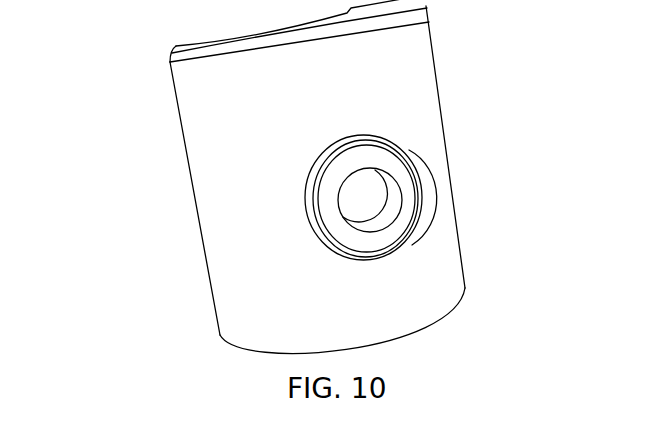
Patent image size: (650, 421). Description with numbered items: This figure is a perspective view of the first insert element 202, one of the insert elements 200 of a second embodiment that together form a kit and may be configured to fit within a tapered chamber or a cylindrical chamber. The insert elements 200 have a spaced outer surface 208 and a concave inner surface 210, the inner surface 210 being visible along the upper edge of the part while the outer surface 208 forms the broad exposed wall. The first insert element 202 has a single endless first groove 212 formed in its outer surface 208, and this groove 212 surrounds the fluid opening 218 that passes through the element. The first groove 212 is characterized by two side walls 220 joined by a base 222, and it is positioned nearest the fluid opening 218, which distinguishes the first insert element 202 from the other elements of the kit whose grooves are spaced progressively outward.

The insert elements 200 is at (157, 123).
The first insert element 202 is at (465, 269).
The outer surface 208 is at (217, 198).
The concave inner surface 210 is at (263, 35).
The first groove 212 is at (328, 243).
The fluid opening 218 is at (357, 196).
The side walls 220 is at (353, 145).
The base 222 is at (387, 145).